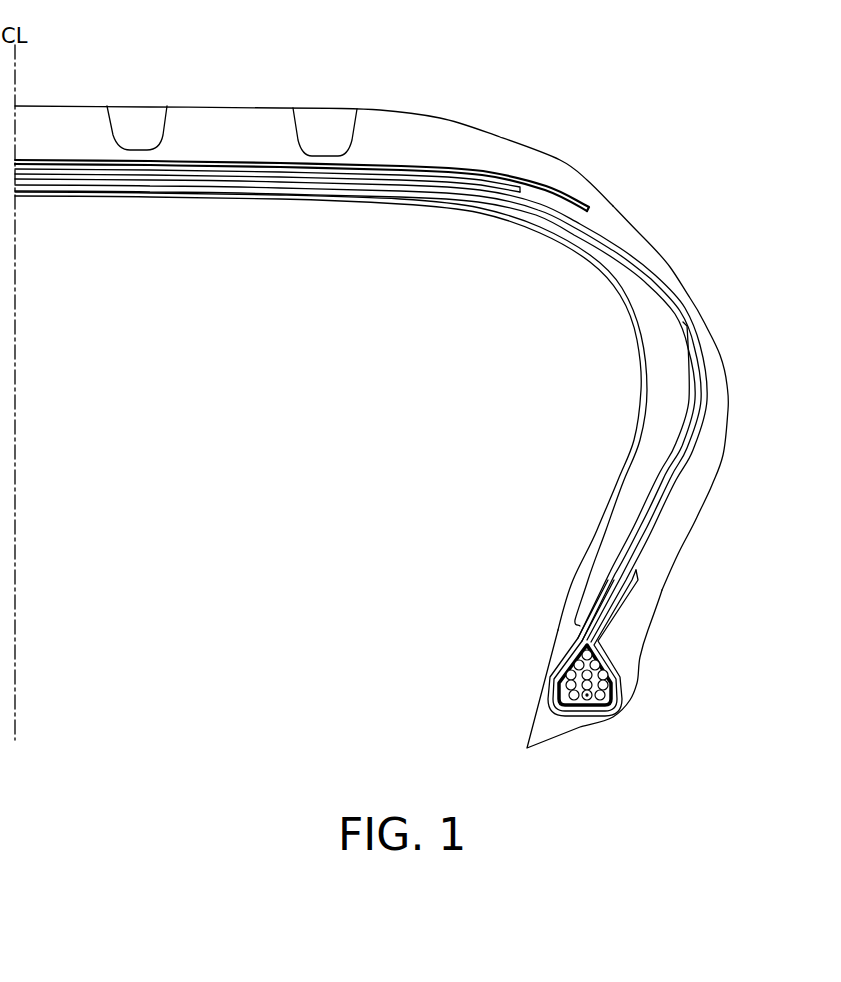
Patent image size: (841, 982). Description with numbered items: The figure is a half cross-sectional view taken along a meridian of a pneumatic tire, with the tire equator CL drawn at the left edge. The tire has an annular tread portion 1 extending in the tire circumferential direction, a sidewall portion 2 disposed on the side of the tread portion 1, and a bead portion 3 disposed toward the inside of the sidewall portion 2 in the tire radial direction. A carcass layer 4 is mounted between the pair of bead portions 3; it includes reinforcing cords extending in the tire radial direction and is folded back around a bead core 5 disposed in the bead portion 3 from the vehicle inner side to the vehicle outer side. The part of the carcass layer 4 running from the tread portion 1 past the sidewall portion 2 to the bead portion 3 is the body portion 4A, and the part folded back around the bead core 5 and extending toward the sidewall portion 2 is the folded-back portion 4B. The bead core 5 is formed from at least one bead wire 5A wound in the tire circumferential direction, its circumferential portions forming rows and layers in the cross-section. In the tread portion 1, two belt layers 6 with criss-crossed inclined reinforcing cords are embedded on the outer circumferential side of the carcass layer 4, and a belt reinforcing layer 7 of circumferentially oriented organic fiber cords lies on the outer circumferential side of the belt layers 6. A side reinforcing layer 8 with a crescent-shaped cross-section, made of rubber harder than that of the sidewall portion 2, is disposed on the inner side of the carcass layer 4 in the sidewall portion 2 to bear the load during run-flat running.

The tread portion 1 is at (68, 92).
The sidewall portion 2 is at (742, 478).
The bead portion 3 is at (662, 718).
The carcass layer 4 is at (532, 206).
The body portion 4A is at (558, 668).
The folded-back portion 4B is at (604, 664).
The bead core 5 is at (558, 699).
The bead wire 5A is at (587, 698).
The belt layer 6 is at (127, 174).
The belt reinforcing layer 7 is at (455, 172).
The side reinforcing layer 8 is at (640, 322).